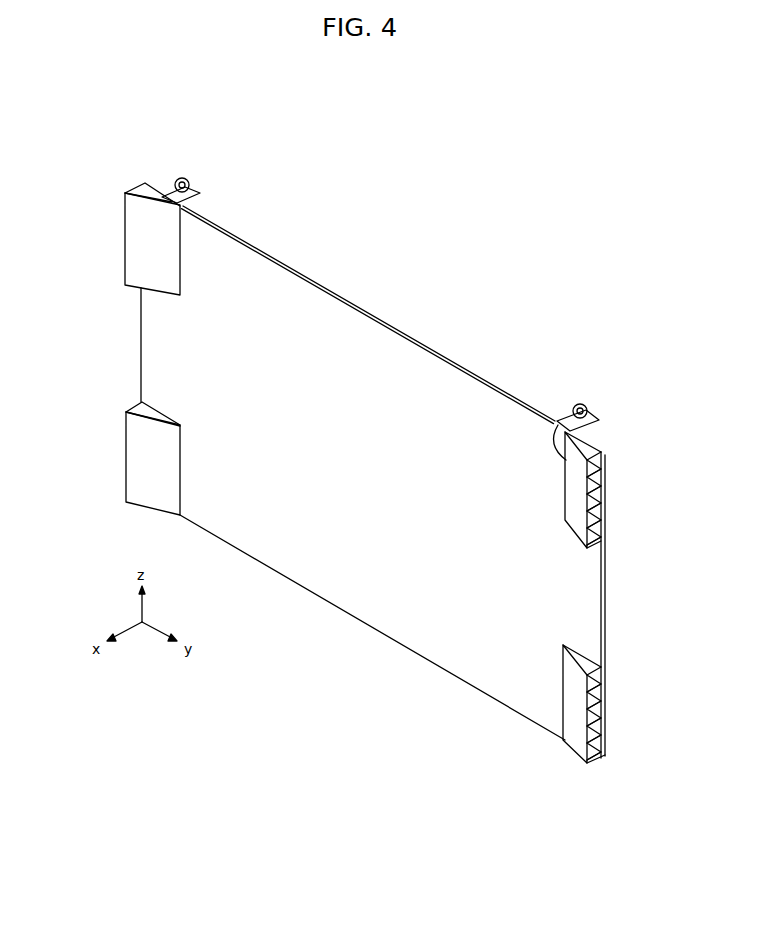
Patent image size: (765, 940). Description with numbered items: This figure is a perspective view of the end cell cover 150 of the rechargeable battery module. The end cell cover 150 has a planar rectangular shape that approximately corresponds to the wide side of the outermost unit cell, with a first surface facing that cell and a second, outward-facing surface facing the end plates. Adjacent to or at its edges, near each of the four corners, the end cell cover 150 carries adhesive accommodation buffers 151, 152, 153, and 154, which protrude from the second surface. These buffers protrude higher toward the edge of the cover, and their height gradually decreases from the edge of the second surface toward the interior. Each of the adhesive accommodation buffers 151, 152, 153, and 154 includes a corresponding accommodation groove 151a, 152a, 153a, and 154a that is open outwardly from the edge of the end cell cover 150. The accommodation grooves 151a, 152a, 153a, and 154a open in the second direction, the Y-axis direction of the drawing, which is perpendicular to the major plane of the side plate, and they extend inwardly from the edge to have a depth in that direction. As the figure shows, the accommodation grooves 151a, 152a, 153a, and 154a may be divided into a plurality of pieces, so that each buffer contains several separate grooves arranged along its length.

The end cell cover 150 is at (370, 487).
The adhesive accommodation buffer 151 is at (613, 454).
The accommodation groove 151a is at (603, 493).
The adhesive accommodation buffer 152 is at (606, 720).
The accommodation groove 152a is at (602, 708).
The adhesive accommodation buffer 153 is at (117, 458).
The accommodation groove 153a is at (127, 478).
The adhesive accommodation buffer 154 is at (130, 236).
The accommodation groove 154a is at (127, 223).